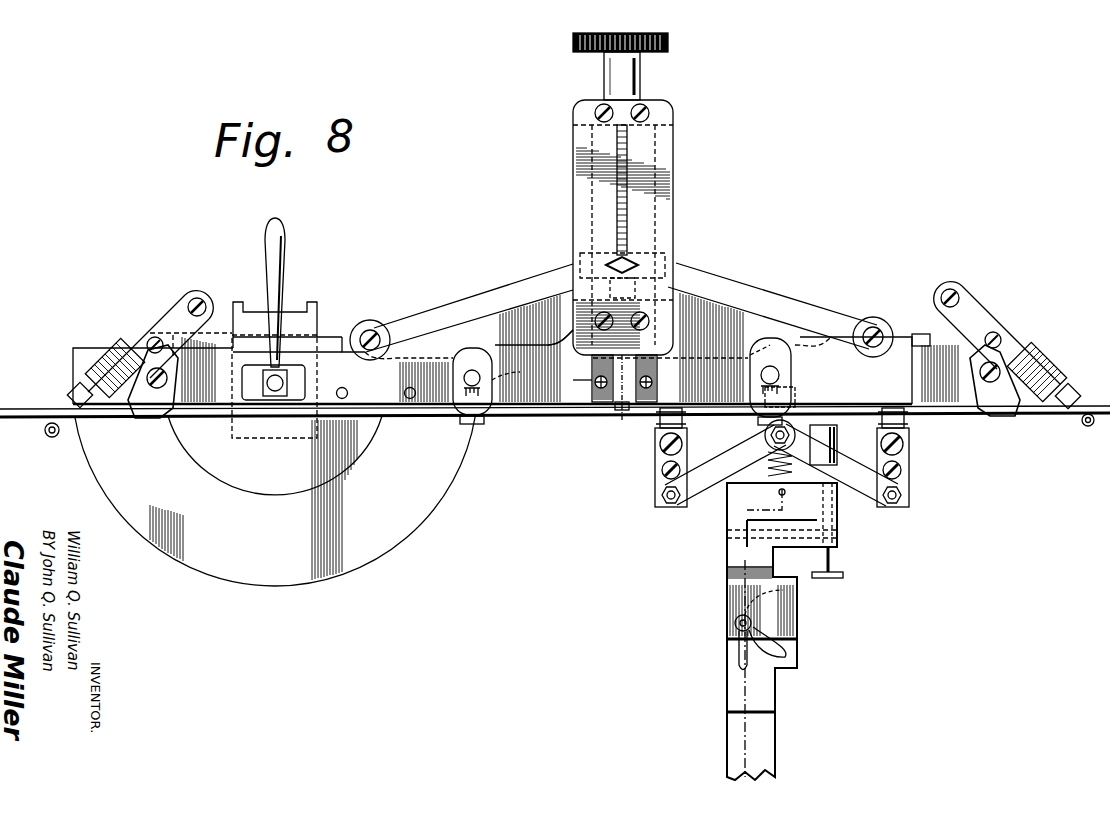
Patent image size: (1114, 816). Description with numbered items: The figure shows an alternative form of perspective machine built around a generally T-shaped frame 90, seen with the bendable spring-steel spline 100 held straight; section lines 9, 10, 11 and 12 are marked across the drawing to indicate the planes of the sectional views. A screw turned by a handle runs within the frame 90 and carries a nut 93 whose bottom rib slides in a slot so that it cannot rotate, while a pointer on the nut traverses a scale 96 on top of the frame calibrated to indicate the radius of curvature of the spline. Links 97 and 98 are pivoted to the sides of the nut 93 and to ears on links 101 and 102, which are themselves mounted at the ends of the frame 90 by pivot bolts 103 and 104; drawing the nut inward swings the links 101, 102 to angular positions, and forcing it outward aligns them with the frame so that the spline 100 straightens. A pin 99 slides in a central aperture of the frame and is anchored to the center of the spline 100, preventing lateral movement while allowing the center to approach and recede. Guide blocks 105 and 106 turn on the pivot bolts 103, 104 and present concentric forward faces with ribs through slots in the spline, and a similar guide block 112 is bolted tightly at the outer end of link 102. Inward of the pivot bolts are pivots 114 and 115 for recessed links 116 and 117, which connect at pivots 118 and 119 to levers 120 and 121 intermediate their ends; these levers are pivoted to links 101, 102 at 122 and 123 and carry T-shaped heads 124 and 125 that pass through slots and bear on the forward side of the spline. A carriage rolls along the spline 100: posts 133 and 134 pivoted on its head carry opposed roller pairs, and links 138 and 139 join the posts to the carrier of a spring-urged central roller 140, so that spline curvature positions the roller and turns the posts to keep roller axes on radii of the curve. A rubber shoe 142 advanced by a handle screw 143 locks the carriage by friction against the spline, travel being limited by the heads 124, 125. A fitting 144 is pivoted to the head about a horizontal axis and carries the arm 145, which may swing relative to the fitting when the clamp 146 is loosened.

The section line 9- 9 is at (293, 194).
The section line 10- 10 is at (462, 327).
The section line 11- 11 is at (640, 12).
The section line 12- 12 is at (905, 392).
The frame 90 is at (665, 232).
The nut 93 is at (668, 256).
The scale 96 is at (632, 162).
The link 97 is at (493, 302).
The link 98 is at (748, 292).
The pin 99 is at (624, 410).
The spline 100 is at (594, 418).
The link 101 is at (372, 394).
The link 102 is at (960, 395).
The pivot bolt 103 is at (462, 410).
The pivot bolt 104 is at (778, 366).
The guide block 105 is at (497, 400).
The guide block 106 is at (762, 390).
The guide block 112 is at (1010, 410).
The pivot 114 is at (572, 352).
The pivot 115 is at (770, 346).
The link 116 is at (332, 340).
The link 117 is at (926, 336).
The pivot 118 is at (143, 342).
The pivot 119 is at (1002, 340).
The lever 120 is at (178, 312).
The lever 121 is at (975, 318).
The pivot 122 is at (208, 300).
The pivot 123 is at (954, 290).
The T-shaped head 124 is at (60, 438).
The T-shaped head 125 is at (1086, 427).
The post 133 is at (655, 455).
The post 134 is at (909, 452).
The link 138 is at (720, 492).
The link 139 is at (880, 492).
The central roller 140 is at (793, 430).
The rubber shoe 142 is at (840, 430).
The handle screw 143 is at (842, 575).
The fitting 144 is at (735, 583).
The arm 145 is at (763, 700).
The clamp 146 is at (736, 626).